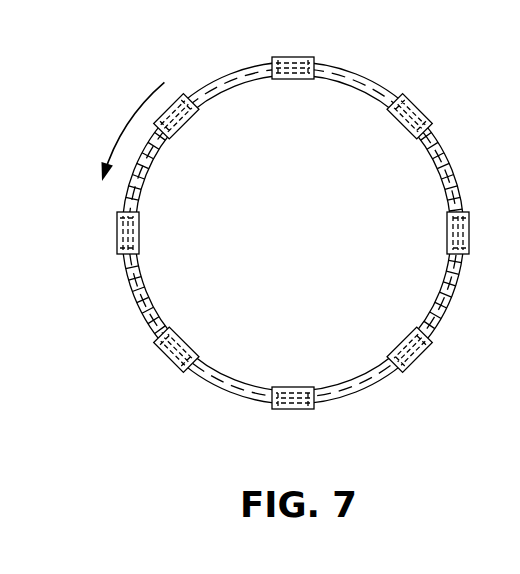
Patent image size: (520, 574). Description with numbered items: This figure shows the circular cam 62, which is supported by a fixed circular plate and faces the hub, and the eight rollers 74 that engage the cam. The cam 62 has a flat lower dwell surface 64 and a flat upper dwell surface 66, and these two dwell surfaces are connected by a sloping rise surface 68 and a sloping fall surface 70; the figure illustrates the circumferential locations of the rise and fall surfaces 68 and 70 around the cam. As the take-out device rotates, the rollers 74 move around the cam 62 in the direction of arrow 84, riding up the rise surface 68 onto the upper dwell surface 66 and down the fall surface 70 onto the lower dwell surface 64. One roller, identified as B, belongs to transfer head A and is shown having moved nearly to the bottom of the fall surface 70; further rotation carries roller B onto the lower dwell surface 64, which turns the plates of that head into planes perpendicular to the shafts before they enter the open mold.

The circular cam 62 is at (132, 318).
The lower dwell surface 64 is at (353, 78).
The upper dwell surface 66 is at (244, 396).
The rise surface 68 is at (155, 170).
The fall surface 70 is at (440, 202).
The rollers 74 is at (400, 124).
The arrow 84 is at (131, 121).
The roller for transfer head A B is at (472, 235).